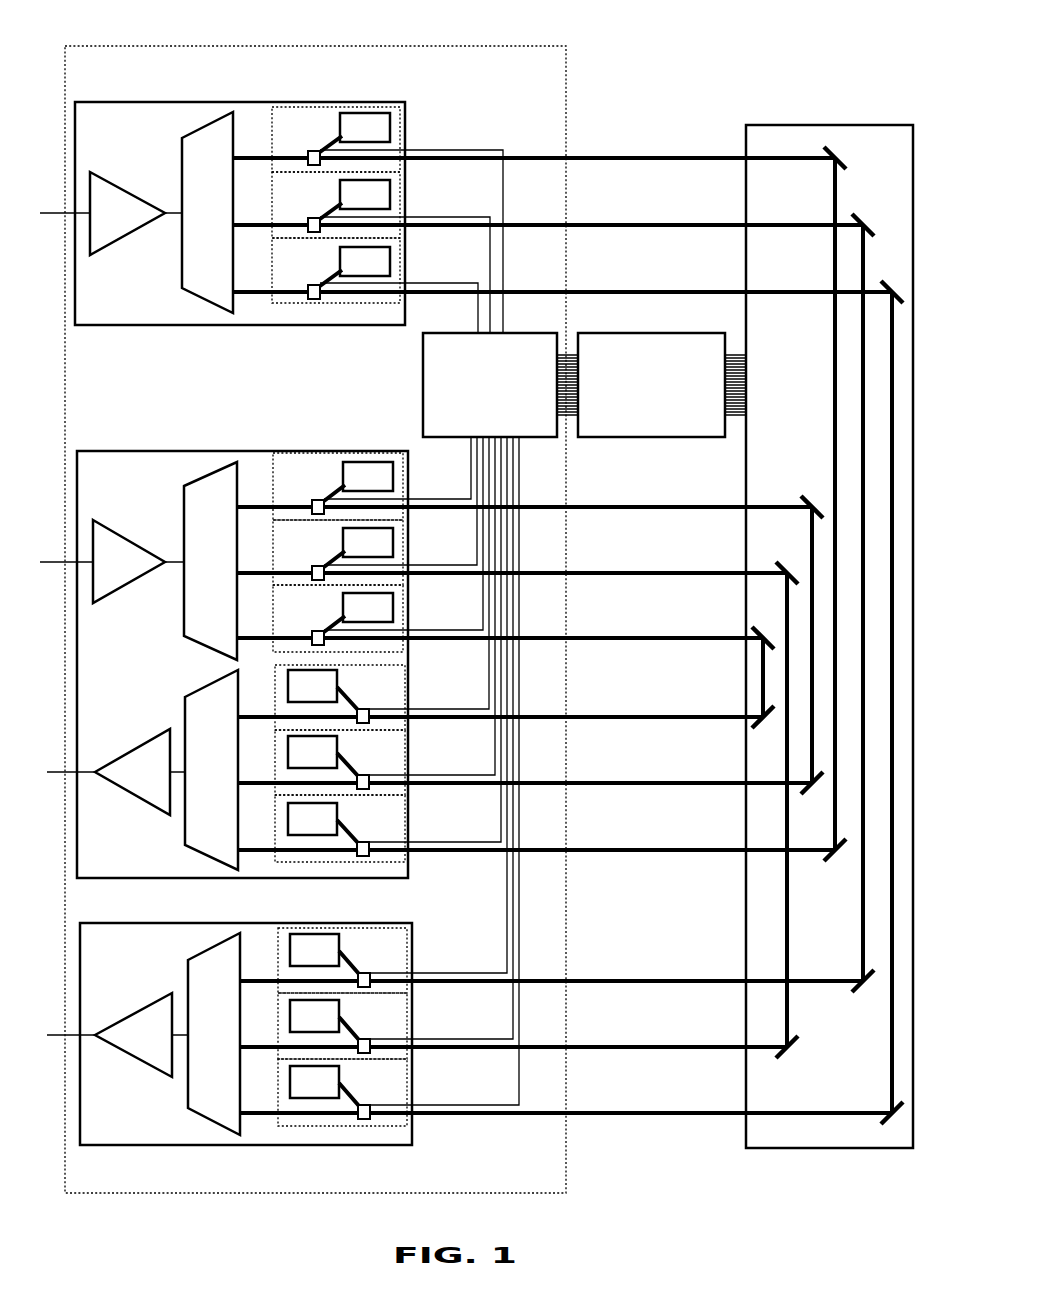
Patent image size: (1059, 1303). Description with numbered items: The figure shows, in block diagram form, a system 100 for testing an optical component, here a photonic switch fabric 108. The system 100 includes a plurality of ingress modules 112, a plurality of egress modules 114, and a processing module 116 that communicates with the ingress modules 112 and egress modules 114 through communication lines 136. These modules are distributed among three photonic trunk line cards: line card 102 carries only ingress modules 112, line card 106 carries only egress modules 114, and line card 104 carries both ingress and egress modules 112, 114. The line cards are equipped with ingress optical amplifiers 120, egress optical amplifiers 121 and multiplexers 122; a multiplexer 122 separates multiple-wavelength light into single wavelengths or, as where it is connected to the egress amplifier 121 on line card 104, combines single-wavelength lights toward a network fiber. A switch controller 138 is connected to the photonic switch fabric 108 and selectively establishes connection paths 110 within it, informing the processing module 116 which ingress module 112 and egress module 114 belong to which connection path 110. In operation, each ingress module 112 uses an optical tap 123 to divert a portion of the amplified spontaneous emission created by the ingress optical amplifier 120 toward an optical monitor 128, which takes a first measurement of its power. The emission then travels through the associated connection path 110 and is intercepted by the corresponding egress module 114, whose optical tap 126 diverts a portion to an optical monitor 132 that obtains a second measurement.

The system for testing an optical component 100 is at (533, 46).
The photonic line card 102 is at (121, 134).
The photonic line card 104 is at (125, 484).
The photonic line card 106 is at (130, 954).
The photonic switch fabric 108 is at (792, 125).
The connection path 110 is at (890, 716).
The ingress module 112 is at (270, 252).
The egress module 114 is at (275, 722).
The processing module 116 is at (510, 420).
The ingress optical amplifier 120 is at (133, 226).
The egress optical amplifier 121 is at (161, 786).
The multiplexer 122 is at (225, 226).
The optical tap 123 is at (310, 150).
The optical tap 126 is at (369, 709).
The optical monitor 128 is at (382, 137).
The optical monitor 132 is at (329, 698).
The communication lines 136 is at (478, 311).
The switch controller 138 is at (668, 420).